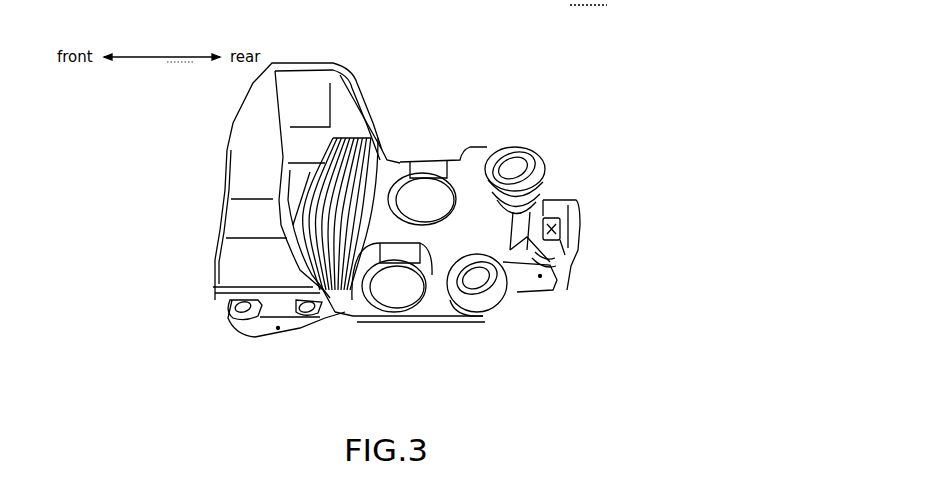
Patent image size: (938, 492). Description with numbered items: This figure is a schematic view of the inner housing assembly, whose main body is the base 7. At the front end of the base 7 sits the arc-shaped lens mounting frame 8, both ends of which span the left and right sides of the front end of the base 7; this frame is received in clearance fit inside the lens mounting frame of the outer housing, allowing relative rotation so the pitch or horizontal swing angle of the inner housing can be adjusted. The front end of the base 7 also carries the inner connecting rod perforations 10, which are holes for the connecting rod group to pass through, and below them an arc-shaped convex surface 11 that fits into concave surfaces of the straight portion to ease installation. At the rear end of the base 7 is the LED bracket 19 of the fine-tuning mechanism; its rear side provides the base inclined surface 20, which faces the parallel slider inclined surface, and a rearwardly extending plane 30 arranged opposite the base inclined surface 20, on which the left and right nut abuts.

The arc-shaped lens mounting frame 8 is at (296, 77).
The base 7 is at (398, 170).
The LED bracket 19 is at (552, 196).
The inner connecting rod perforation 10 is at (300, 304).
The arc-shaped convex surface 11 is at (300, 322).
The rearwardly extending plane 30 is at (540, 285).
The base inclined surface 20 is at (561, 270).